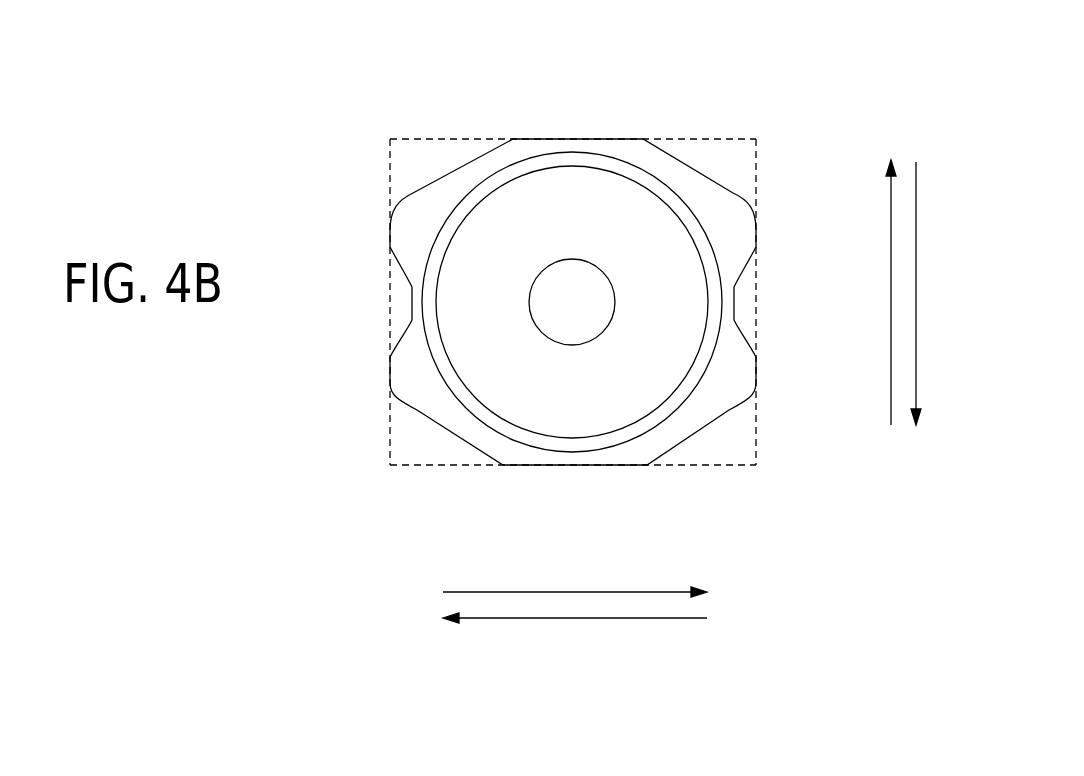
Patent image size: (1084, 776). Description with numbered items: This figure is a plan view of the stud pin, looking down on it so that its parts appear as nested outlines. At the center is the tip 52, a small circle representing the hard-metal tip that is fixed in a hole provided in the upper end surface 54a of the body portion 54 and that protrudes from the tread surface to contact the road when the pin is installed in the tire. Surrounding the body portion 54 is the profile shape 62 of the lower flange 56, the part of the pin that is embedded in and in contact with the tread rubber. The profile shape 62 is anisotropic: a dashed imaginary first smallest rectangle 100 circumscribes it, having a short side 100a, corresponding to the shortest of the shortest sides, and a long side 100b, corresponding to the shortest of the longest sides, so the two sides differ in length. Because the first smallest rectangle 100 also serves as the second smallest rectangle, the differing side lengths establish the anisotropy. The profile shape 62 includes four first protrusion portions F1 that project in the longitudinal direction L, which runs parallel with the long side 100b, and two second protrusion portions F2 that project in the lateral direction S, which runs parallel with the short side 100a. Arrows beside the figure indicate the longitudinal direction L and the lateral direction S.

The first smallest rectangle 100 is at (421, 136).
The short side 100a is at (390, 320).
The long side 100b is at (521, 136).
The profile shape 62 is at (681, 171).
The lower flange 56 is at (757, 336).
The body portion 54 is at (640, 397).
The upper end surface 54a is at (507, 390).
The tip 52 is at (568, 330).
The first protrusion portions F1 is at (390, 232).
The second protrusion portions F2 is at (607, 138).
The lateral direction S is at (911, 292).
The longitudinal direction L is at (575, 620).